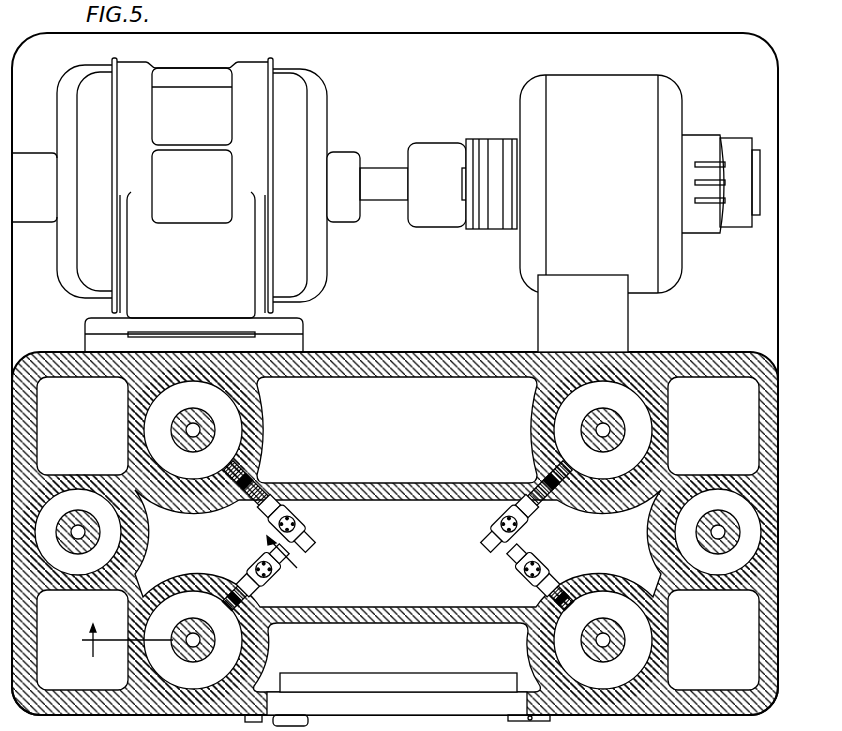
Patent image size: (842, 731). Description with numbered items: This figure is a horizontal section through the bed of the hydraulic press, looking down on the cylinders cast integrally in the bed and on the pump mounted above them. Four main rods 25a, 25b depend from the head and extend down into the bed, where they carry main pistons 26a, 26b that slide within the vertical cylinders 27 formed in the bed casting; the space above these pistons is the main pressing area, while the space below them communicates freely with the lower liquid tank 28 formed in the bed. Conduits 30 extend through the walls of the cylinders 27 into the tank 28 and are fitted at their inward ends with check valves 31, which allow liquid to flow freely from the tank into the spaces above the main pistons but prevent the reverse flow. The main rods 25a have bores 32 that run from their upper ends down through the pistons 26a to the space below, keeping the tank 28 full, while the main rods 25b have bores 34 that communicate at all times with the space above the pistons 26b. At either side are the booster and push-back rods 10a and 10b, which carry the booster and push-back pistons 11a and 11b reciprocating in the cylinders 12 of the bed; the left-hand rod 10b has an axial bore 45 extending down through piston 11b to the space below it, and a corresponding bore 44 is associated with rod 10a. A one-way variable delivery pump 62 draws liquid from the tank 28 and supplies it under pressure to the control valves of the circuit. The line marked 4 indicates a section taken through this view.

The section line 4- 4 is at (189, 596).
The booster and push-back rod 10a is at (727, 517).
The booster and push-back rod 10b is at (81, 513).
The booster and push-back piston 11a is at (687, 542).
The booster and push-back piston 11b is at (107, 552).
The cylinder 12 is at (72, 497).
The main rod 25a is at (602, 418).
The main rod 25b is at (203, 422).
The main piston 26a is at (643, 418).
The main piston 26b is at (236, 438).
The vertical cylinder 27 is at (241, 446).
The lower liquid tank 28 is at (424, 580).
The conduit 30 is at (266, 518).
The check valve 31 is at (305, 521).
The bore 32 is at (603, 427).
The bore 34 is at (195, 428).
The shaft opening 44 is at (718, 523).
The axial bore 45 is at (84, 533).
The one-way variable delivery pump 62 is at (604, 170).